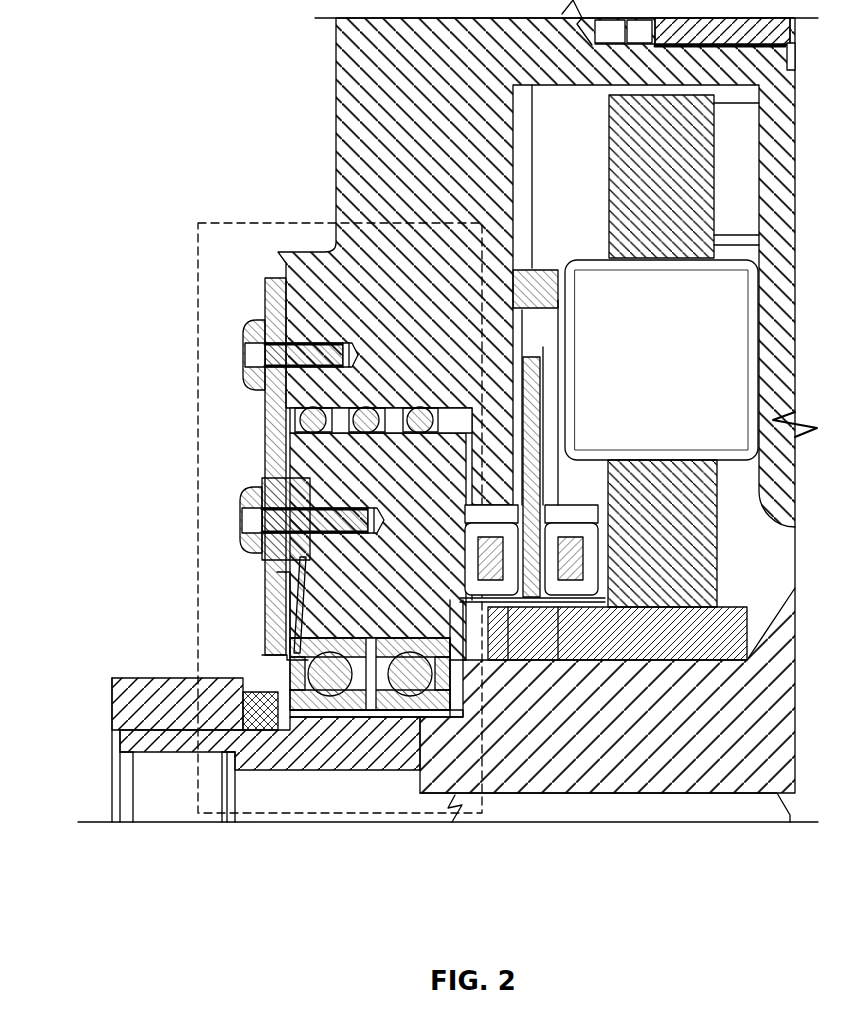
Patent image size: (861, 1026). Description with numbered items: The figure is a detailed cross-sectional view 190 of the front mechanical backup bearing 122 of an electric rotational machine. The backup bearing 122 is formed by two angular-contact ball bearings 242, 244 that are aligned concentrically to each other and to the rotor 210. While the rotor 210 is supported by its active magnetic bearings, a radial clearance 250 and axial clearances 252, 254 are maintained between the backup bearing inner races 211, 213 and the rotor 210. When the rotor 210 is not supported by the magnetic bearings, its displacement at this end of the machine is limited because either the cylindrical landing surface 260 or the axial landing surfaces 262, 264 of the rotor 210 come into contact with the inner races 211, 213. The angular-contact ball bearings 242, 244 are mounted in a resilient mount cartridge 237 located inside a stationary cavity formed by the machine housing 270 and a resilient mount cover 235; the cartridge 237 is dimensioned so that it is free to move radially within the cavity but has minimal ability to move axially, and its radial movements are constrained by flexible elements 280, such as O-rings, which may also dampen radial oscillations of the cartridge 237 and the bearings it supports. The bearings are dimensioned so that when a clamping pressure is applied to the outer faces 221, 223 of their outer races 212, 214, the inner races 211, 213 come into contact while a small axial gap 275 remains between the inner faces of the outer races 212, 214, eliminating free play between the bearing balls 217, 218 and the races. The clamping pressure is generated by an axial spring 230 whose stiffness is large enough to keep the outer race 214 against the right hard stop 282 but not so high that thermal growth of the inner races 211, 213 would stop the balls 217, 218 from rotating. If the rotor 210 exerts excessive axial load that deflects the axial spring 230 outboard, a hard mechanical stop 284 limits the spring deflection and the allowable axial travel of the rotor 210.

The view 190 is at (277, 130).
The front mechanical backup bearing 122 is at (196, 232).
The machine housing 270 is at (305, 280).
The resilient mount cover 235 is at (272, 400).
The flexible elements 280 is at (303, 416).
The resilient mount cartridge 237 is at (272, 478).
The outer race 214 is at (412, 655).
The axial spring 230 is at (300, 600).
The axial gap 275 is at (355, 628).
The hard mechanical stop 284 is at (267, 643).
The outer face 221 is at (270, 660).
The outer race 212 is at (317, 675).
The angular-contact ball bearing 242 is at (240, 690).
The axial landing surface 262 is at (257, 712).
The axial clearance 252 is at (247, 757).
The backup bearing inner race 211 is at (245, 783).
The radial clearance 250 is at (310, 717).
The bearing ball 217 is at (333, 692).
The rotor 210 is at (362, 763).
The bearing ball 218 is at (397, 688).
The cylindrical landing surface 260 is at (413, 704).
The backup bearing inner race 213 is at (435, 715).
The axial clearance 254 is at (462, 717).
The axial landing surface 264 is at (458, 700).
The angular-contact ball bearing 244 is at (466, 682).
The outer face 223 is at (460, 662).
The right hard stop 282 is at (460, 640).